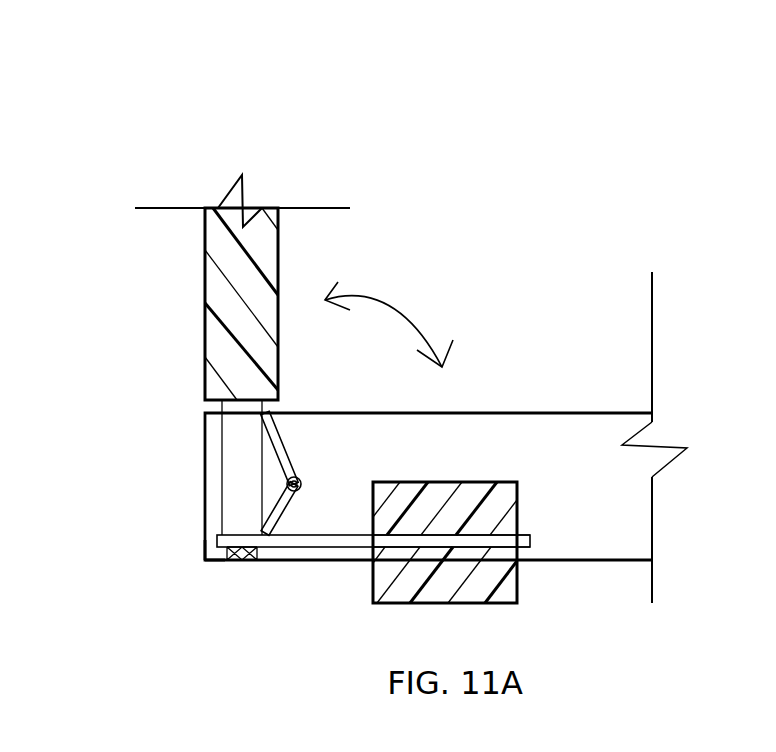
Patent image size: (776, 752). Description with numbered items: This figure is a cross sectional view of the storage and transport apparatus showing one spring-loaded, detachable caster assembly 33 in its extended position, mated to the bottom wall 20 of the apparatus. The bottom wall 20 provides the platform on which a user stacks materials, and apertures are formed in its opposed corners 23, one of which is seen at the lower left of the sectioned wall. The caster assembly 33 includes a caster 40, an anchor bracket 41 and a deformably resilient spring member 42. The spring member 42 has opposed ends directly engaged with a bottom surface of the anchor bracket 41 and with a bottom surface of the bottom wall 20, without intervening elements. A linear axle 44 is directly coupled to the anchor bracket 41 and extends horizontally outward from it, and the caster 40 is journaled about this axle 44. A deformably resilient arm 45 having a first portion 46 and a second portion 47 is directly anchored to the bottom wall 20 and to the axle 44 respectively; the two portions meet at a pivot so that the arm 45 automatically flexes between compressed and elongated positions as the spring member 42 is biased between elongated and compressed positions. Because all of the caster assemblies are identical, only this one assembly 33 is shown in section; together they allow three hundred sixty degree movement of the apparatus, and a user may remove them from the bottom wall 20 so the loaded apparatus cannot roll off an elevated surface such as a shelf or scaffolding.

The bottom wall 20 is at (213, 473).
The opposed corners 23 is at (208, 555).
The caster assembly 33 is at (664, 125).
The caster 40 is at (518, 587).
The anchor bracket 41 is at (228, 525).
The spring member 42 is at (273, 553).
The axle 44 is at (527, 540).
The arm 45 is at (302, 453).
The first portion 46 is at (280, 415).
The second portion 47 is at (292, 505).